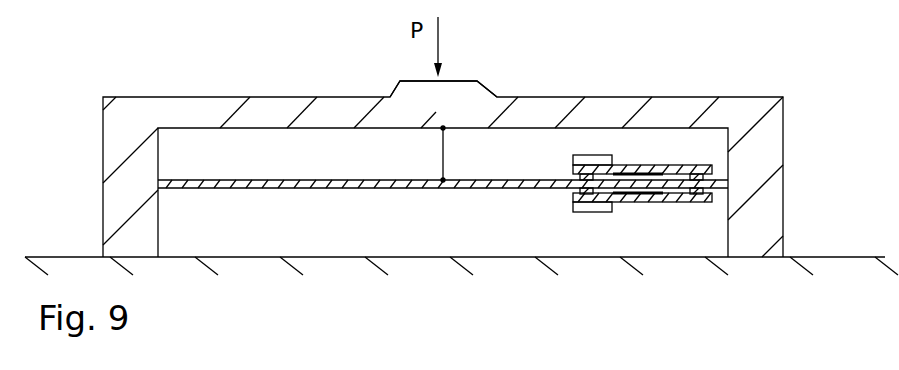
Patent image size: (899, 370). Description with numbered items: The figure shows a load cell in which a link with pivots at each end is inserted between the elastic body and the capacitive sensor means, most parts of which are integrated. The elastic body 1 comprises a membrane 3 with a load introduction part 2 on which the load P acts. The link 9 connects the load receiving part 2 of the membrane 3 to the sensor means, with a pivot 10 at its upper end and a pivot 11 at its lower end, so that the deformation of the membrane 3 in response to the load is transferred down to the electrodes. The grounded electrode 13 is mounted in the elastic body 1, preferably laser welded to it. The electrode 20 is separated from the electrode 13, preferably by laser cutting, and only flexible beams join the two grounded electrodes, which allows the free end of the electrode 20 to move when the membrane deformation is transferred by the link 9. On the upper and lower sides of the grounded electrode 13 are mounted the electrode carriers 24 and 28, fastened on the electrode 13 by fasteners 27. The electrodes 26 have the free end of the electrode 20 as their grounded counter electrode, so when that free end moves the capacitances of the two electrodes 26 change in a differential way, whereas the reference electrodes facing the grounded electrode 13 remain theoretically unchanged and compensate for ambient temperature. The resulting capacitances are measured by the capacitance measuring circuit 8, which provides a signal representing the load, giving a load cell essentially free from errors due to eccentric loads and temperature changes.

The elastic body 1 is at (765, 158).
The load introduction part 2 is at (479, 81).
The membrane 3 is at (233, 97).
The capacitance measuring circuit 8 is at (597, 162).
The link 9 is at (435, 153).
The pivot 10 is at (443, 128).
The pivot 11 is at (438, 188).
The grounded electrode 13 is at (175, 181).
The electrode 20 is at (332, 188).
The electrode carrier 24 is at (712, 199).
The electrodes 26 is at (647, 200).
The fasteners 27 is at (577, 175).
The electrode carrier 28 is at (712, 166).